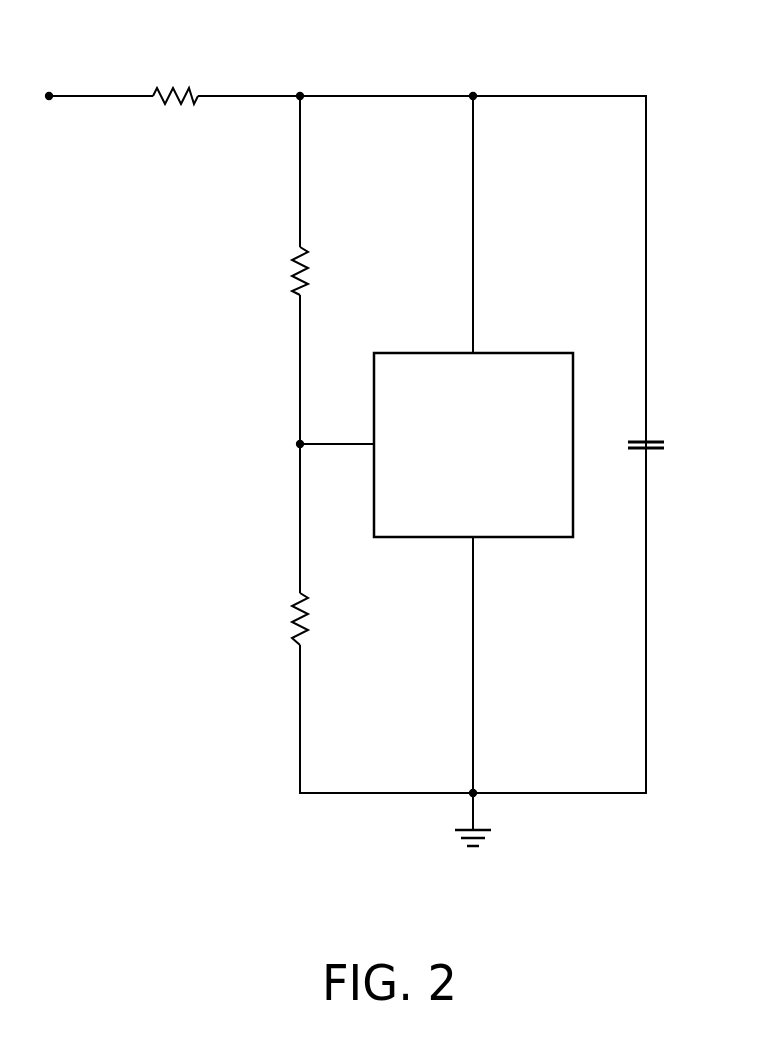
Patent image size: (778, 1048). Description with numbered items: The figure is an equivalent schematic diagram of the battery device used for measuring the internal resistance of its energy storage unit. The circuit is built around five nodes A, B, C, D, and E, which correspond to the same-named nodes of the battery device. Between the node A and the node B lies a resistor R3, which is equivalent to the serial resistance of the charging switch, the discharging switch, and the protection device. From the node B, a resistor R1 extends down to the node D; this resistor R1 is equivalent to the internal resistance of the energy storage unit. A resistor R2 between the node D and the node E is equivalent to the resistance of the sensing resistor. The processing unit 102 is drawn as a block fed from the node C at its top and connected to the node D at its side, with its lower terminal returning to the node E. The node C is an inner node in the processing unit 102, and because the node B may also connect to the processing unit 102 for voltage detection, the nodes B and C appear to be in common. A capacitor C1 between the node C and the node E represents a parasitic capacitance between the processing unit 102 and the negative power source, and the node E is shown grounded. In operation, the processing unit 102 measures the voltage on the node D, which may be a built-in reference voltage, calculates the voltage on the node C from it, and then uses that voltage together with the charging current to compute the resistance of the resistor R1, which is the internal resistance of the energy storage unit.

The node A is at (49, 94).
The node B is at (300, 93).
The node C is at (473, 93).
The node D is at (297, 444).
The node E is at (475, 791).
The resistor R1 is at (292, 273).
The resistor R2 is at (292, 622).
The resistor R3 is at (172, 90).
The capacitor C1 is at (665, 443).
The processing unit 102 is at (375, 352).